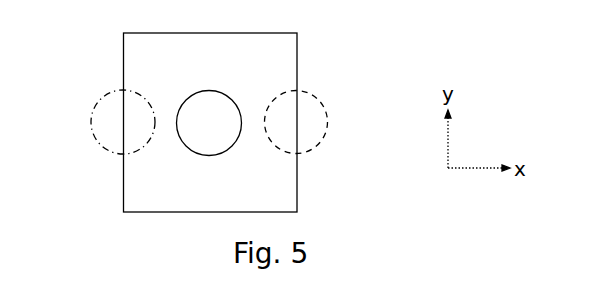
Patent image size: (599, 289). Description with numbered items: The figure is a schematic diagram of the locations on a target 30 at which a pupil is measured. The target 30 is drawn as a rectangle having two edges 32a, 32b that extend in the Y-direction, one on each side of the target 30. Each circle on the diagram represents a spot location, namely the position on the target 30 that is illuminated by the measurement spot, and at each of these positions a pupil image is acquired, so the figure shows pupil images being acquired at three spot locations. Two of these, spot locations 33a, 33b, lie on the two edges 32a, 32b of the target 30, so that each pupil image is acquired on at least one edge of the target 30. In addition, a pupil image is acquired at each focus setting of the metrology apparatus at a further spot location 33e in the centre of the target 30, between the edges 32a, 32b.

The target 30 is at (297, 53).
The edge 32a is at (123, 183).
The edge 32b is at (297, 180).
The spot location 33a is at (91, 119).
The spot location 33b is at (327, 122).
The spot location 33e is at (187, 97).